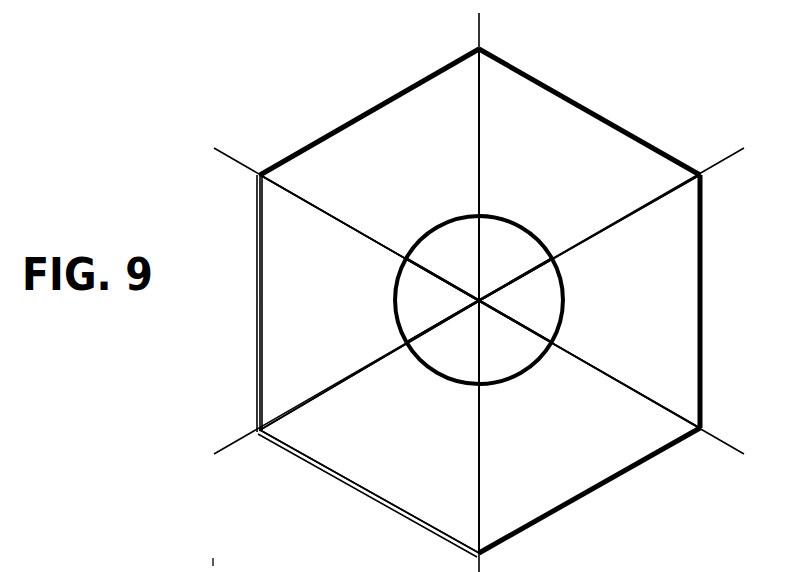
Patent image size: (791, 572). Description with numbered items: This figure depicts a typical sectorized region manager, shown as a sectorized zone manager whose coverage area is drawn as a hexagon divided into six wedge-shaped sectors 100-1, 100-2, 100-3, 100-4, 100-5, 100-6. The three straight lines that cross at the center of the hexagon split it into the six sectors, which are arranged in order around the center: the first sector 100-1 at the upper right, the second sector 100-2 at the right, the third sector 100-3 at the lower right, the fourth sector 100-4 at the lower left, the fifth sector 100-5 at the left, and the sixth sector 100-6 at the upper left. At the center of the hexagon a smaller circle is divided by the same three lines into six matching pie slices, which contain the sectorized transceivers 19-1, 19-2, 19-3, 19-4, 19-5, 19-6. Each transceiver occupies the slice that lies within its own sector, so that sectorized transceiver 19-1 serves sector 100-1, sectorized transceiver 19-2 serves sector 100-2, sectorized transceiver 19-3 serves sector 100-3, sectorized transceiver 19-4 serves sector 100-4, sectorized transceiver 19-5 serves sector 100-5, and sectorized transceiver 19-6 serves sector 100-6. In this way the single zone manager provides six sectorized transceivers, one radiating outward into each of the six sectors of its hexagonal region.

The sector 100-1 is at (589, 175).
The sector 100-2 is at (589, 301).
The sector 100-3 is at (589, 427).
The sector 100-4 is at (368, 429).
The sector 100-5 is at (368, 303).
The sector 100-6 is at (369, 175).
The sectorized transceiver 19-1 is at (515, 258).
The sectorized transceiver 19-2 is at (521, 300).
The sectorized transceiver 19-3 is at (515, 342).
The sectorized transceiver 19-4 is at (442, 342).
The sectorized transceiver 19-5 is at (437, 300).
The sectorized transceiver 19-6 is at (442, 258).